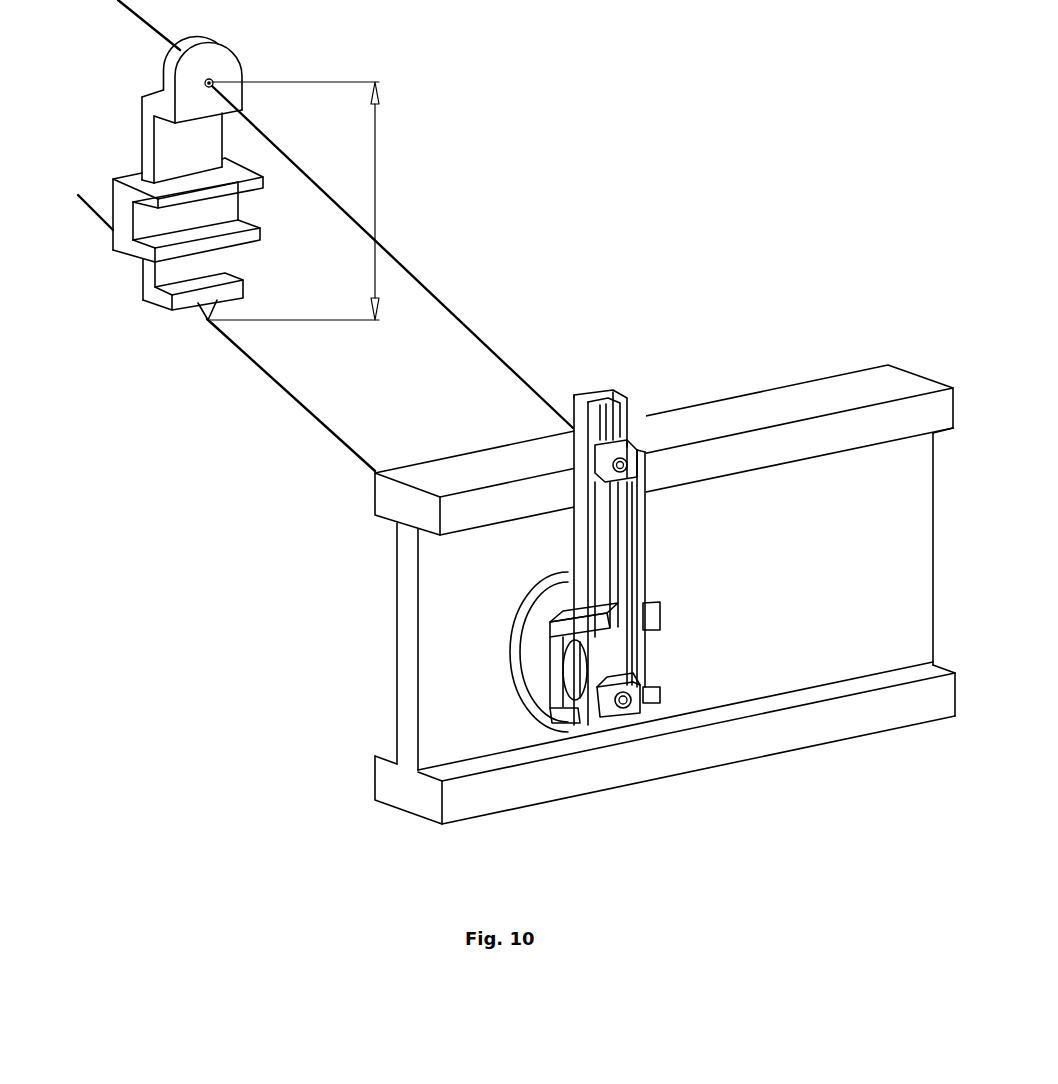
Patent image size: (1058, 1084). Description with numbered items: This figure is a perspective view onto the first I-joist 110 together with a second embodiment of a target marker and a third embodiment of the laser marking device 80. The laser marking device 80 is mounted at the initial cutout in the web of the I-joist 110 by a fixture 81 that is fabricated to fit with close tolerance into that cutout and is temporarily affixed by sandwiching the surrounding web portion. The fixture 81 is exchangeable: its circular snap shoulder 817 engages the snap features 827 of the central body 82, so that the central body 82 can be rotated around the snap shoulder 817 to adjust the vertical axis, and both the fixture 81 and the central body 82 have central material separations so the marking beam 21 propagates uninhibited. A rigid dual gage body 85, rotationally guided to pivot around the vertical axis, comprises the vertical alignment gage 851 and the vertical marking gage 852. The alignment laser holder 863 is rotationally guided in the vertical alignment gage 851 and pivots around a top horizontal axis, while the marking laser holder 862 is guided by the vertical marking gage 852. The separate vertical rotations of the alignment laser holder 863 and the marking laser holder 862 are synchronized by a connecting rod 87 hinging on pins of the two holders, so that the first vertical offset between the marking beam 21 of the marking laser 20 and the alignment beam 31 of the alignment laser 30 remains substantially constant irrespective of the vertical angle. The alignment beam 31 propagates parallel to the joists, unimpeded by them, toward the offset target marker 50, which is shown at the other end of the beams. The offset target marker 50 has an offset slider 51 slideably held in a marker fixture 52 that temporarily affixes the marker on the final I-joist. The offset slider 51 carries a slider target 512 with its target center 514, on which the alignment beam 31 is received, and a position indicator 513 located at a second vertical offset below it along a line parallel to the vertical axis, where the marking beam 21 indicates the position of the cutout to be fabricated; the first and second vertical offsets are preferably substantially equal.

The marking laser 20 is at (628, 706).
The marking beam 21 is at (267, 374).
The alignment laser 30 is at (624, 461).
The alignment beam 31 is at (408, 265).
The offset target marker 50 is at (300, 262).
The offset slider 51 is at (142, 97).
The marker fixture 52 is at (255, 180).
The laser marking device 80 is at (628, 784).
The fixture 81 is at (527, 688).
The central body 82 is at (570, 695).
The rigid dual gage body 85 is at (582, 438).
The connecting rod 87 is at (640, 513).
The I-joist 110 is at (372, 849).
The slider target 512 is at (192, 62).
The position indicator 513 is at (209, 321).
The target center 514 is at (212, 81).
The snap shoulder 817 is at (553, 661).
The snap features 827 is at (563, 610).
The vertical alignment gage 851 is at (627, 395).
The vertical marking gage 852 is at (588, 660).
The marking laser holder 862 is at (605, 712).
The alignment laser holder 863 is at (598, 467).